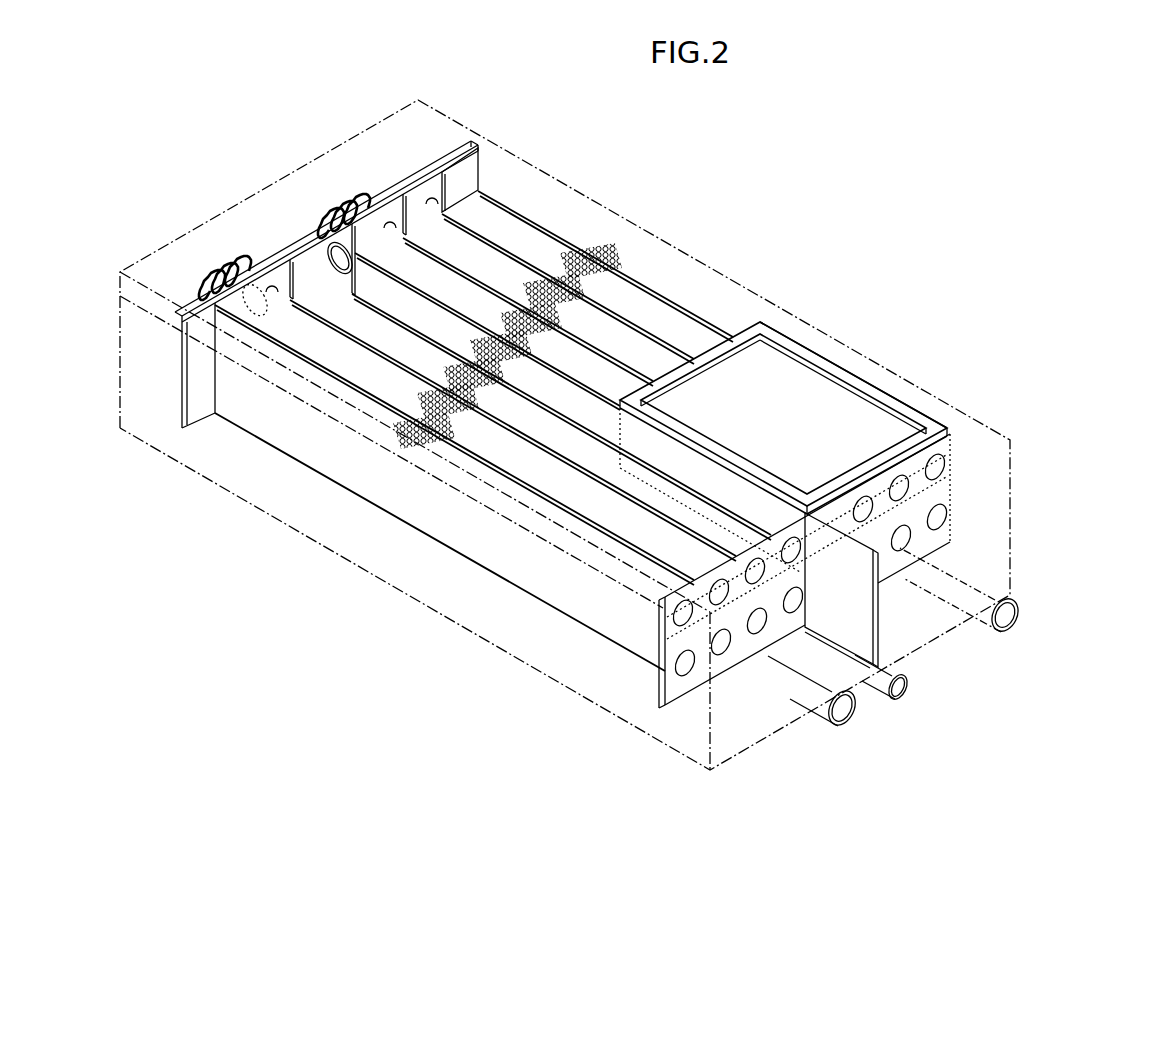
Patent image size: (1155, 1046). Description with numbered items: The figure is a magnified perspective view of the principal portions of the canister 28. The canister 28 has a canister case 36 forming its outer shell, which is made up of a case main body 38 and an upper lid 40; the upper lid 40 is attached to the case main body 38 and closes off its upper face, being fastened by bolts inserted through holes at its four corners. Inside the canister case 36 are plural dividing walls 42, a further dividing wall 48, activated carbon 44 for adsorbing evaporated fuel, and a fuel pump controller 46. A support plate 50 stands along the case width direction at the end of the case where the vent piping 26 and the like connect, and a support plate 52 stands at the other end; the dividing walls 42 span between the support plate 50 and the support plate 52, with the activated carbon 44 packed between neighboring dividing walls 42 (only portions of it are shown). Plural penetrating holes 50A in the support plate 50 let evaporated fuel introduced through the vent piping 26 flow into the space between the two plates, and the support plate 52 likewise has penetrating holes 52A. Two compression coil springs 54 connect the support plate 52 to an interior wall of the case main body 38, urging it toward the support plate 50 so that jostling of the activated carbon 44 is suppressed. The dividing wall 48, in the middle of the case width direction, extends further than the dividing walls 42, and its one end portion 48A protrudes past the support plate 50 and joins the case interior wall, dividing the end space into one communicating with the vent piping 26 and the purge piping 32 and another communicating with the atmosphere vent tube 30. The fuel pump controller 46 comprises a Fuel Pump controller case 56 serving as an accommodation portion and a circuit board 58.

The vent piping 26 is at (848, 726).
The canister 28 is at (785, 172).
The atmosphere vent tube 30 is at (1016, 609).
The purge piping 32 is at (907, 696).
The canister case 36 is at (800, 275).
The case main body 38 is at (1010, 478).
The upper lid 40 is at (862, 380).
The dividing walls 42 is at (445, 262).
The activated carbon 44 is at (548, 252).
The fuel pump controller 46 is at (903, 398).
The dividing wall 48 is at (570, 370).
The one end portion 48A is at (883, 635).
The support plate 50 is at (958, 437).
The penetrating holes 50A is at (947, 518).
The support plate 52 is at (380, 193).
The penetrating holes 52A is at (325, 254).
The compression coil springs 54 is at (330, 197).
The Fuel Pump controller case 56 is at (813, 348).
The circuit board 58 is at (768, 372).